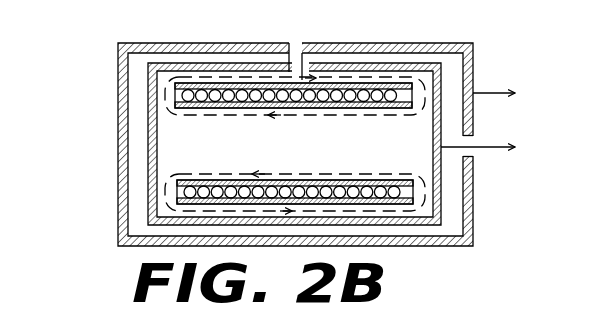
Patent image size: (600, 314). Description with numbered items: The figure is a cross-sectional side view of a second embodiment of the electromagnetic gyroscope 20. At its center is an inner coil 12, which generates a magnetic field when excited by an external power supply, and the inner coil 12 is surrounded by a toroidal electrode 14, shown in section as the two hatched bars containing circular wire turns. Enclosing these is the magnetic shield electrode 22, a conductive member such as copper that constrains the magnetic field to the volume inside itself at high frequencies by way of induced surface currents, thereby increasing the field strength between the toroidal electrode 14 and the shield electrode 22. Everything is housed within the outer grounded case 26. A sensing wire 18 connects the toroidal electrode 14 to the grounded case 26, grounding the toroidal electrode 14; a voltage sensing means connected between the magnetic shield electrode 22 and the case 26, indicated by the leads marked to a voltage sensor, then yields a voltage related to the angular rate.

The electromagnetic gyroscope 20 is at (141, 23).
The grounded case 26 is at (120, 103).
The magnetic shield electrode 22 is at (150, 133).
The sensing wire 18 is at (289, 43).
The inner coil 12 is at (178, 199).
The toroidal electrode 14 is at (176, 192).